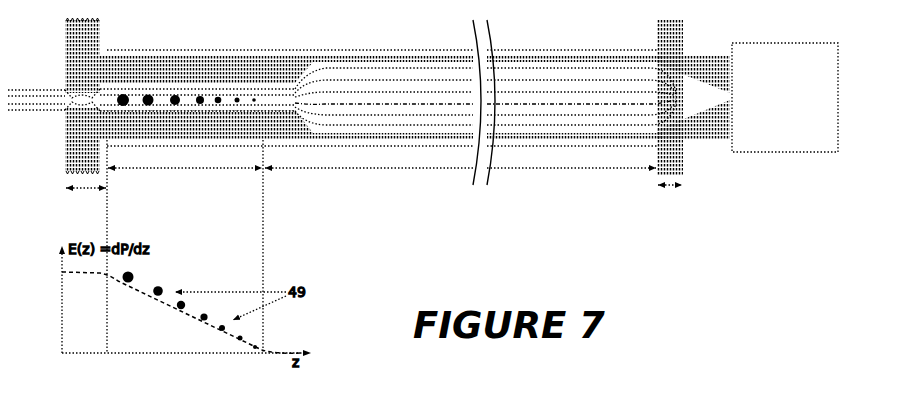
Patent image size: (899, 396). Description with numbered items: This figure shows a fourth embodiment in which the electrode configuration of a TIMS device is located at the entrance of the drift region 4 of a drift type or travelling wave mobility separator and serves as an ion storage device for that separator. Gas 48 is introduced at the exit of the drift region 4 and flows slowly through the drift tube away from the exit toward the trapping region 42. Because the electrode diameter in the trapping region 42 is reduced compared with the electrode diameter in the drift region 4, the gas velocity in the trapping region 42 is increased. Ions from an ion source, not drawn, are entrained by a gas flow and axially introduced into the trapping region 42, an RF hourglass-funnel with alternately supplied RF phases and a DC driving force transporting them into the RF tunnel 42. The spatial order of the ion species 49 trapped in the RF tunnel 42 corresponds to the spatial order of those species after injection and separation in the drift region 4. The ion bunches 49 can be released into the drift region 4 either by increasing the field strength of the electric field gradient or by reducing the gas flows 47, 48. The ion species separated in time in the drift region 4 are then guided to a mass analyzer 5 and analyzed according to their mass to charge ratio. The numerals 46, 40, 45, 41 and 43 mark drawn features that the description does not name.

The gas flow 47 is at (91, 96).
The ion species 49 is at (193, 55).
The input waveguide 46 is at (54, 100).
The waveguide transition / fan-out 40 is at (367, 96).
The waveguide array 45 is at (540, 96).
The gas 48 is at (693, 97).
The mass analyzer 5 is at (785, 97).
The trapping region 42 is at (185, 177).
The drift region 4 is at (460, 176).
The left pad width 41 is at (86, 197).
The right pad width 43 is at (670, 195).